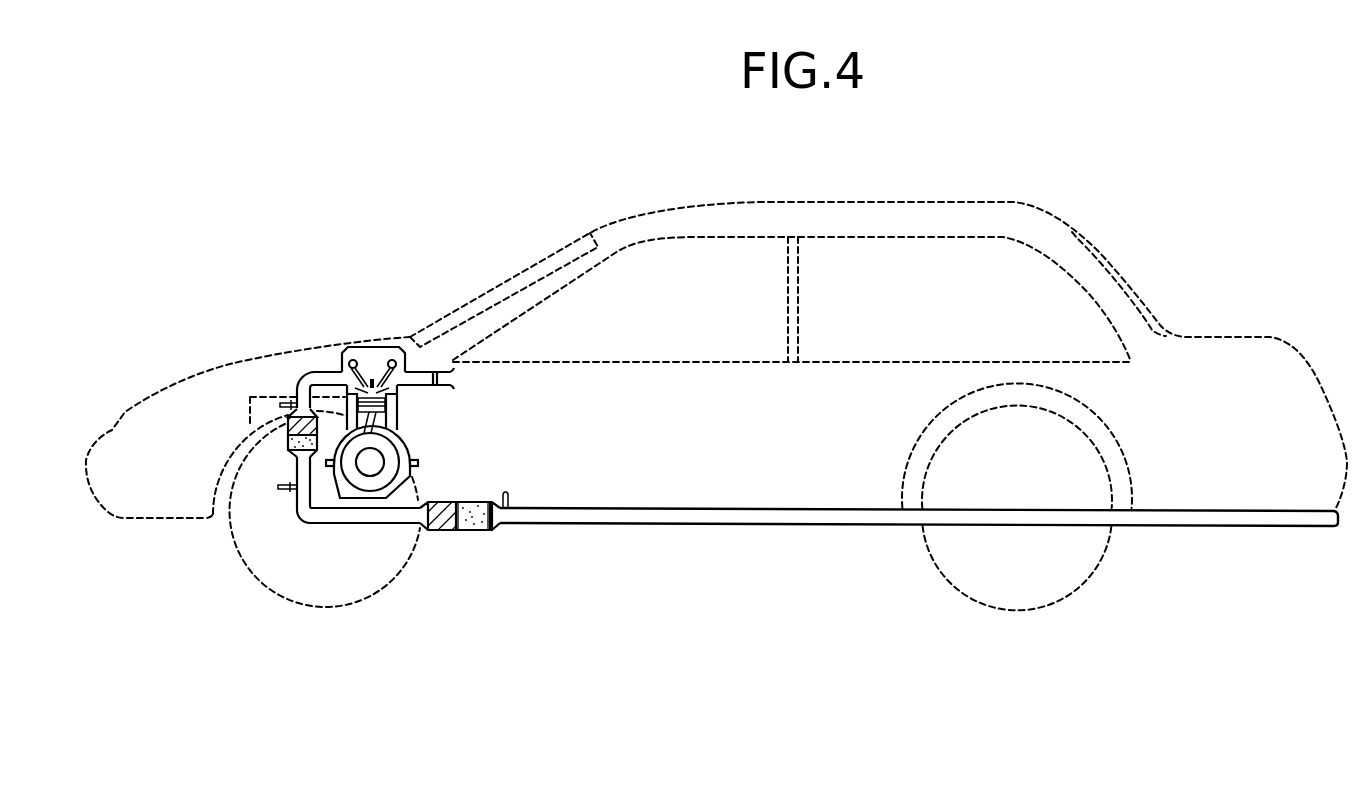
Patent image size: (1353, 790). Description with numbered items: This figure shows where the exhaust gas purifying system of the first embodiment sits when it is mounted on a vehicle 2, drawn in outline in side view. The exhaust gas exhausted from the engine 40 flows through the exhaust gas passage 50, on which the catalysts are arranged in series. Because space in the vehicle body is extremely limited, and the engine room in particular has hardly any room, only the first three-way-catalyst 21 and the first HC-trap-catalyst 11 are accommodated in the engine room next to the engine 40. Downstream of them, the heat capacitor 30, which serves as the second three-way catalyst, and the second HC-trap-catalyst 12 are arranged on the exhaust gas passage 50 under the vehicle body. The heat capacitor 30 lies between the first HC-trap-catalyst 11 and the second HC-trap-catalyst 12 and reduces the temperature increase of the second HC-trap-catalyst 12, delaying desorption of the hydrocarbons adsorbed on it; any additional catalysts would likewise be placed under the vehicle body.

The vehicle 2 is at (698, 612).
The first HC-trap-catalyst 11 is at (288, 446).
The second HC-trap-catalyst 12 is at (480, 532).
The first three-way-catalyst 21 is at (290, 417).
The heat capacitor 30 is at (438, 532).
The engine 40 is at (412, 436).
The exhaust gas passage 50 is at (618, 527).